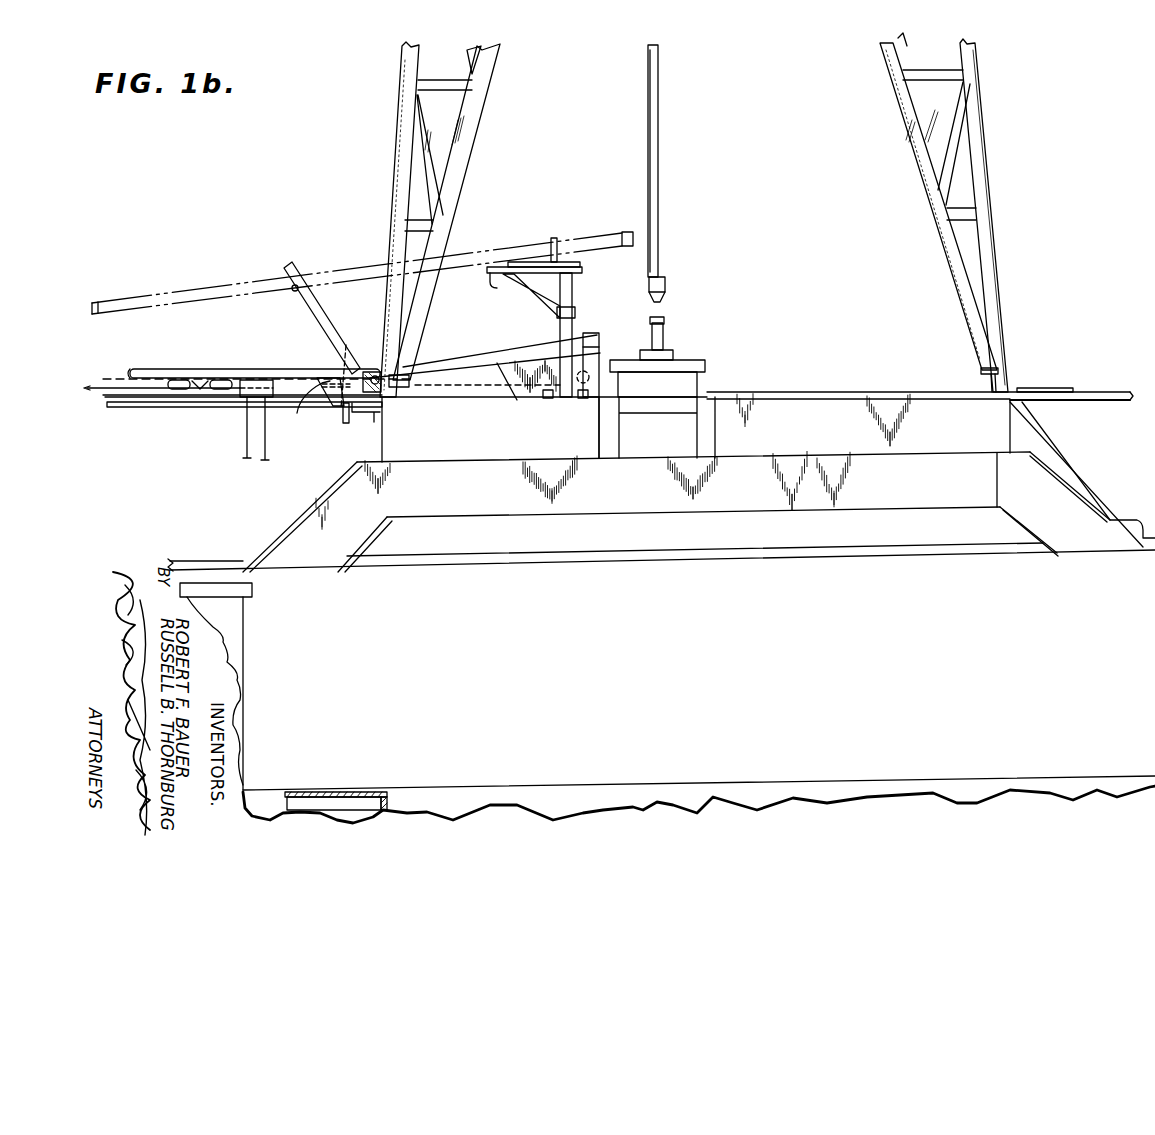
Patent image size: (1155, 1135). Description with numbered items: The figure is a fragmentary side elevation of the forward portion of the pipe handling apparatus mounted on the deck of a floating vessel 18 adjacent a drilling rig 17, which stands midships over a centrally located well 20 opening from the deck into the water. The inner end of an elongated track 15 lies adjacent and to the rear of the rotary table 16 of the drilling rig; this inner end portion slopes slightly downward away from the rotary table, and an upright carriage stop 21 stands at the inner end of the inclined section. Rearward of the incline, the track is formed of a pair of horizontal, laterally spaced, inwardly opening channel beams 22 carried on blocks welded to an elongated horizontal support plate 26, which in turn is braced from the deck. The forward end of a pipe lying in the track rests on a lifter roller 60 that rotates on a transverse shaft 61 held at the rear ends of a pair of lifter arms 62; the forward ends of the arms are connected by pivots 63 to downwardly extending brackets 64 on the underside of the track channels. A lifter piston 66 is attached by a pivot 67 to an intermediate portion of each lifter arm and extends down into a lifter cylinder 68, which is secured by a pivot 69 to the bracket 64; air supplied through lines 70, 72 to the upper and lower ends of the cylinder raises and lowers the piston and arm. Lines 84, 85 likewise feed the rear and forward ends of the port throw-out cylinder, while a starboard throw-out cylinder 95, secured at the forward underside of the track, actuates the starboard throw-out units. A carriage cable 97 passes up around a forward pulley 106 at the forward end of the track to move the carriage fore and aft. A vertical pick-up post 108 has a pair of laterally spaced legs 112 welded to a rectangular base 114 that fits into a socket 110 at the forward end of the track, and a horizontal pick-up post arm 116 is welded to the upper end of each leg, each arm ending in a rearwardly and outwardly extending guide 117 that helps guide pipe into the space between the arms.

The elongated track 15 is at (194, 356).
The rotary table 16 is at (706, 361).
The drilling rig 17 is at (990, 214).
The floating vessel 18 is at (322, 790).
The well 20 is at (575, 809).
The carriage stop 21 is at (598, 337).
The channel beams 22 is at (141, 368).
The support plate 26 is at (170, 408).
The lifter roller 60 is at (299, 303).
The shaft 61 is at (291, 289).
The lifter arms 62 is at (334, 322).
The pivots 63 is at (376, 373).
The brackets 64 is at (372, 420).
The lifter piston 66 is at (343, 358).
The pivot 67 is at (345, 350).
The lifter cylinder 68 is at (346, 425).
The pivot 69 is at (335, 406).
The line 70 is at (320, 386).
The line 72 is at (383, 413).
The line 84 is at (246, 455).
The line 85 is at (268, 458).
The starboard throw-out cylinder 95 is at (250, 412).
The carriage cable 97 is at (238, 378).
The forward pulley 106 is at (592, 383).
The pick-up post 108 is at (573, 297).
The socket 110 is at (543, 401).
The legs 112 is at (560, 329).
The base 114 is at (582, 401).
The pick-up post arm 116 is at (552, 247).
The guide 117 is at (492, 277).